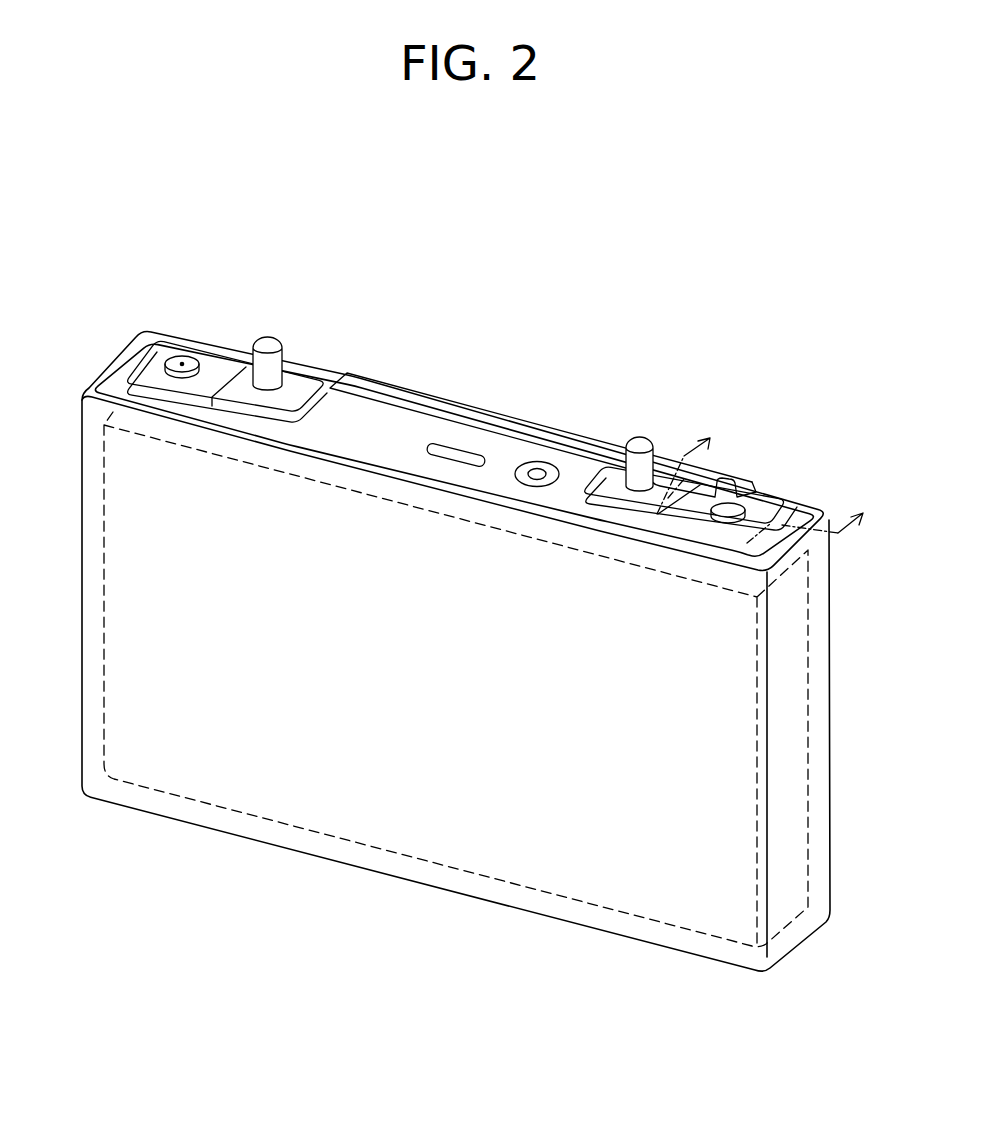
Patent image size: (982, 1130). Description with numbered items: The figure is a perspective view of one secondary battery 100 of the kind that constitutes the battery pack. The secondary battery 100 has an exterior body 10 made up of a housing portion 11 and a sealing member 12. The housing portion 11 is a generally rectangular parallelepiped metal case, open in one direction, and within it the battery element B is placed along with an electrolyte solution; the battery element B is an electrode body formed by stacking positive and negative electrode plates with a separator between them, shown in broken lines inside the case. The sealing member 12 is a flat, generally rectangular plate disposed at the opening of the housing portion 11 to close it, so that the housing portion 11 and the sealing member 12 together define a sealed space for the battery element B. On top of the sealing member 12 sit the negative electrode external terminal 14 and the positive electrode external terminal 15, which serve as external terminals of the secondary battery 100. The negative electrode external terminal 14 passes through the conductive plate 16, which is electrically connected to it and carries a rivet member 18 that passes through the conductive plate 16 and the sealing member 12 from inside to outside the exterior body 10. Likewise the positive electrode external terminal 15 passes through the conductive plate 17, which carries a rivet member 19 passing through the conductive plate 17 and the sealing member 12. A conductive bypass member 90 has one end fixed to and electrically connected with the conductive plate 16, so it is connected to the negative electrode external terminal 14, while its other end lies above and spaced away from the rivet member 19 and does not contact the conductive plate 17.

The secondary battery 100 is at (111, 257).
The exterior body 10 is at (293, 918).
The housing portion 11 is at (373, 863).
The sealing member 12 is at (383, 442).
The negative electrode external terminal 14 is at (267, 334).
The positive electrode external terminal 15 is at (637, 433).
The conductive plate 16 is at (214, 366).
The conductive plate 17 is at (706, 500).
The rivet member 18 is at (171, 353).
The rivet member 19 is at (748, 506).
The bypass member 90 is at (485, 415).
The battery element B is at (578, 843).